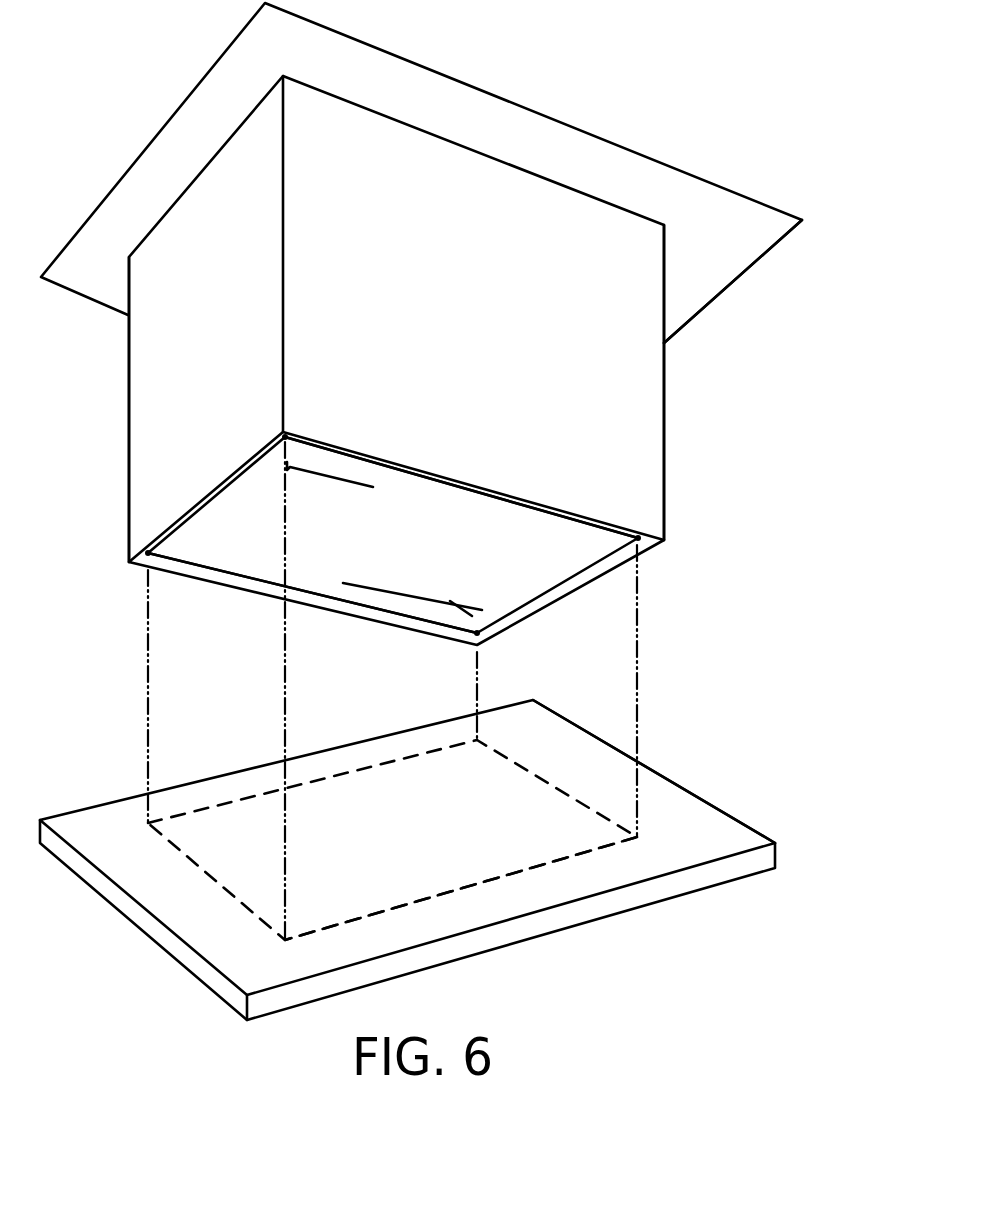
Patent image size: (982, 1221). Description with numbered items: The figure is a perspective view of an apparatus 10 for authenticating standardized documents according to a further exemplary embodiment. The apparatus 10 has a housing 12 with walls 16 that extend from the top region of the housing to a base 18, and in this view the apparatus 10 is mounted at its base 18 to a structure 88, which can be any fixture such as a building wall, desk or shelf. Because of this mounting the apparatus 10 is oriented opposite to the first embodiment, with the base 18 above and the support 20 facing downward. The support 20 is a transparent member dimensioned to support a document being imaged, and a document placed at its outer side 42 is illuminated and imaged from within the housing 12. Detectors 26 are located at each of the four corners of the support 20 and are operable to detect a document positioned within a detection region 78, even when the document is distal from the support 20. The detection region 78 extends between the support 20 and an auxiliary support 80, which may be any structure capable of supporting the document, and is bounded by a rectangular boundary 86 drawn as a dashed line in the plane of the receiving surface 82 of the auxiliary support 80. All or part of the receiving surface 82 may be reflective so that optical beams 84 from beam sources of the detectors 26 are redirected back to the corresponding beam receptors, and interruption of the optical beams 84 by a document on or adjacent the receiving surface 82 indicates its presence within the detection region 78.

The apparatus 10 is at (722, 581).
The housing 12 is at (140, 468).
The walls 16 is at (145, 382).
The base 18 is at (516, 161).
The support 20 is at (377, 535).
The detectors 26 is at (143, 545).
The outer side 42 is at (340, 530).
The detection region 78 is at (694, 763).
The auxiliary support 80 is at (750, 840).
The receiving surface 82 is at (638, 838).
The optical beams 84 is at (148, 742).
The rectangular boundary 86 is at (530, 775).
The structure 88 is at (715, 260).